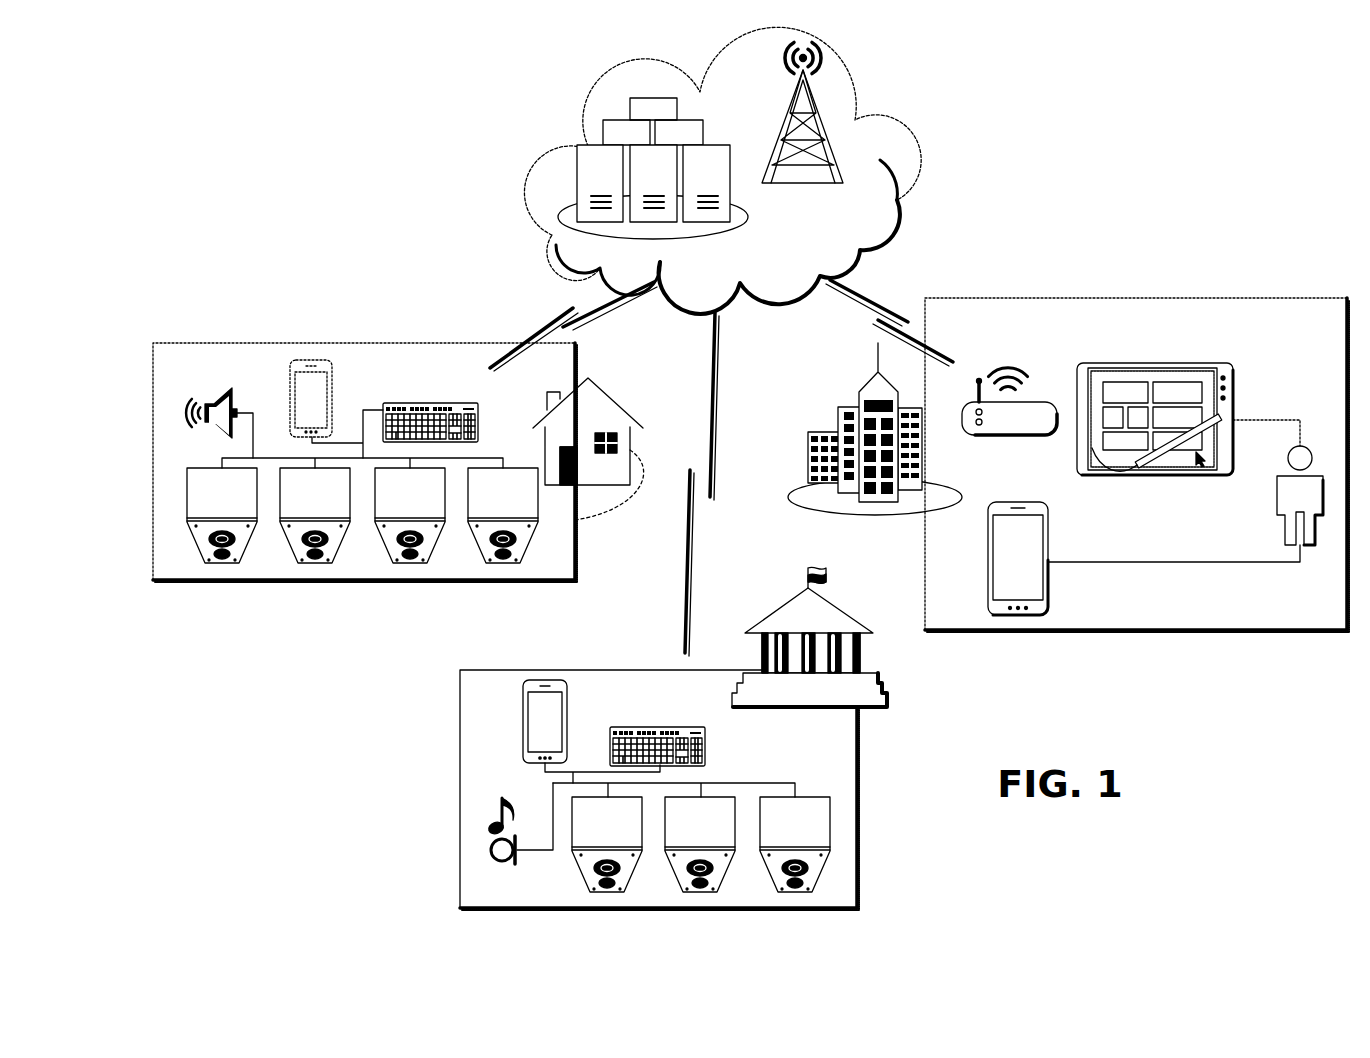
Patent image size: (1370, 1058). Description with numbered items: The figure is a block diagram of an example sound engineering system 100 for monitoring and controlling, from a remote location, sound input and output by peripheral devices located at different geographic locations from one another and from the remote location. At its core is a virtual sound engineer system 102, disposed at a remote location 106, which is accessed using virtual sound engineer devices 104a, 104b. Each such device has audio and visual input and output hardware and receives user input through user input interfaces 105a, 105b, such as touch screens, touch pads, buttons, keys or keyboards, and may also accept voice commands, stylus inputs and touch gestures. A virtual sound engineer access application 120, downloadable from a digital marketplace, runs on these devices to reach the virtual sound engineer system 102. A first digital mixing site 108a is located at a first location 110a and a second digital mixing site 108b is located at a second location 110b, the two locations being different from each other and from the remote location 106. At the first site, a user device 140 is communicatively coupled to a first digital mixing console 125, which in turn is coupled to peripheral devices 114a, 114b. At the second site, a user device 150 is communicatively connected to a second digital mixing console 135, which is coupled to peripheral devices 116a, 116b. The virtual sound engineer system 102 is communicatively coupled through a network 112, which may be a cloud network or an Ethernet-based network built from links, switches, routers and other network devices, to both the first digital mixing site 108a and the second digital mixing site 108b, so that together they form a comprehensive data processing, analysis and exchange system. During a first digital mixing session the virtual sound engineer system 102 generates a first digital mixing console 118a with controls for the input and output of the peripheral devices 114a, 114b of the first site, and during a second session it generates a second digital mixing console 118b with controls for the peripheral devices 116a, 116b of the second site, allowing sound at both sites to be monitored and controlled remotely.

The system 100 is at (486, 131).
The virtual sound engineer system 102 is at (1163, 278).
The virtual sound engineer device 104a is at (1048, 538).
The virtual sound engineer device 104b is at (1238, 402).
The user input interface 105a is at (1030, 577).
The user input interface 105b is at (1153, 366).
The remote location 106 is at (1008, 297).
The first digital mixing site 108a is at (407, 329).
The second digital mixing site 108b is at (434, 741).
The first location 110a is at (257, 340).
The second location 110b is at (645, 670).
The network 112 is at (895, 178).
The peripheral device 114a is at (223, 390).
The peripheral device 114b is at (517, 467).
The peripheral device 116a is at (816, 796).
The peripheral device 116b is at (492, 848).
The first digital mixing console 118a is at (1135, 372).
The second digital mixing console 118b is at (1180, 372).
The virtual sound engineer access application 120 is at (1198, 466).
The first digital mixing console 125 is at (417, 402).
The second digital mixing console 135 is at (647, 726).
The user device 140 is at (318, 358).
The user device 150 is at (530, 679).